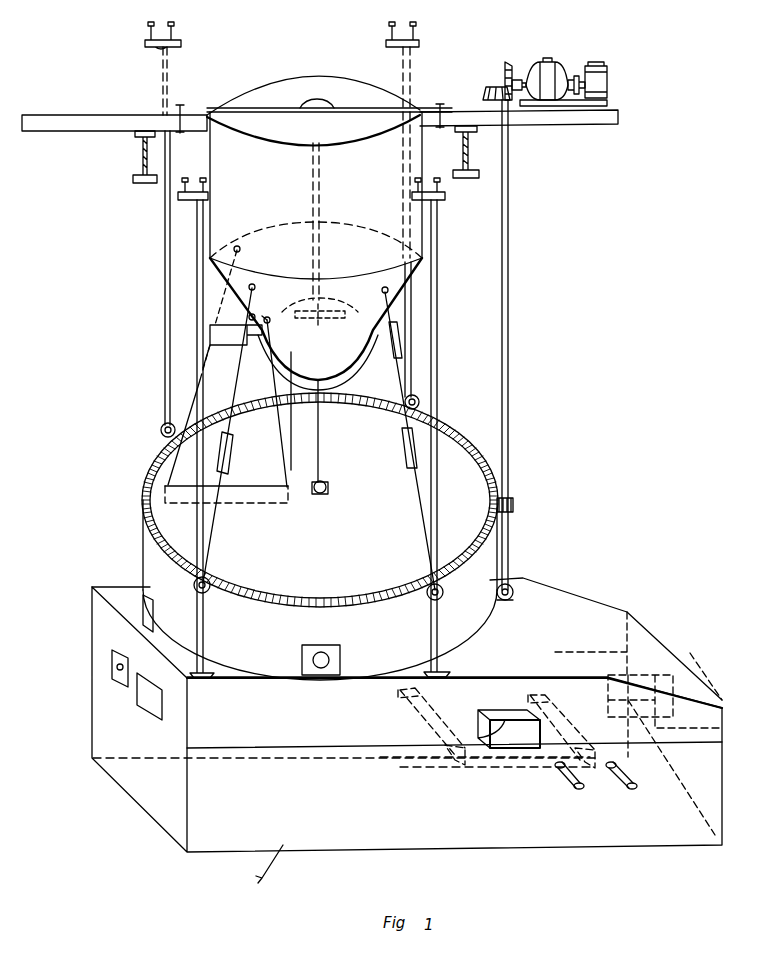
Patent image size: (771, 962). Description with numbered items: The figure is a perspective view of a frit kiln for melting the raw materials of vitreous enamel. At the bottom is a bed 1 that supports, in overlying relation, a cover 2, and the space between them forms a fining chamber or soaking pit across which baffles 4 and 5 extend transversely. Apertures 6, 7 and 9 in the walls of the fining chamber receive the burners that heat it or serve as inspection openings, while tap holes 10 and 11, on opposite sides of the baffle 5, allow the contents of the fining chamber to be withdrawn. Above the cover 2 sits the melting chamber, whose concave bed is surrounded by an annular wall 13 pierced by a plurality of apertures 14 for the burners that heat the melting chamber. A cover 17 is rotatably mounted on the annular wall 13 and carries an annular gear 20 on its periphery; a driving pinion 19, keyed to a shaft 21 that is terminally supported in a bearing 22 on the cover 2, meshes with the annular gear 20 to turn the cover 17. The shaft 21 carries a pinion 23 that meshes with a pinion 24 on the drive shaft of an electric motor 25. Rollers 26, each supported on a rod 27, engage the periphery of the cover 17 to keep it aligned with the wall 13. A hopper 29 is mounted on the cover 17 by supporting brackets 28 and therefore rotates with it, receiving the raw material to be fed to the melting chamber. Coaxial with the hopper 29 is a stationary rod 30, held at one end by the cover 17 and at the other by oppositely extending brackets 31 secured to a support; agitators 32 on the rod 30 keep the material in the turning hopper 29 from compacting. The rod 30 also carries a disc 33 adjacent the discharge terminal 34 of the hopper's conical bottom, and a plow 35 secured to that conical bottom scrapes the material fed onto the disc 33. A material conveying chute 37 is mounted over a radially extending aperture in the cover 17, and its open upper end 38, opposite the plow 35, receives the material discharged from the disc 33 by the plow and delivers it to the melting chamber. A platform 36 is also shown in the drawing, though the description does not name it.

The bed 1 is at (269, 872).
The cover 2 is at (606, 617).
The baffle 4 is at (425, 703).
The baffle 5 is at (565, 722).
The aperture 6 is at (112, 664).
The aperture 7 is at (148, 697).
The aperture 9 is at (505, 728).
The tap hole 10 is at (580, 788).
The tap hole 11 is at (633, 788).
The annular wall 13 is at (160, 562).
The aperture 14 is at (146, 604).
The cover 17 is at (455, 458).
The driving pinion 19 is at (511, 500).
The annular gear 20 is at (456, 568).
The shaft 21 is at (509, 450).
The bearing 22 is at (514, 598).
The pinion 23 is at (484, 92).
The pinion 24 is at (508, 66).
The electric motor 25 is at (546, 72).
The roller 26 is at (165, 423).
The rod 27 is at (196, 298).
The supporting bracket 28 is at (220, 528).
The hopper 29 is at (262, 85).
The stationary rod 30 is at (321, 428).
The bracket 31 is at (312, 106).
The agitator 32 is at (320, 323).
The disc 33 is at (357, 356).
The discharge terminal 34 is at (307, 423).
The plow 35 is at (266, 316).
The platform 36 is at (165, 490).
The material conveying chute 37 is at (170, 482).
The upper end 38 is at (217, 325).